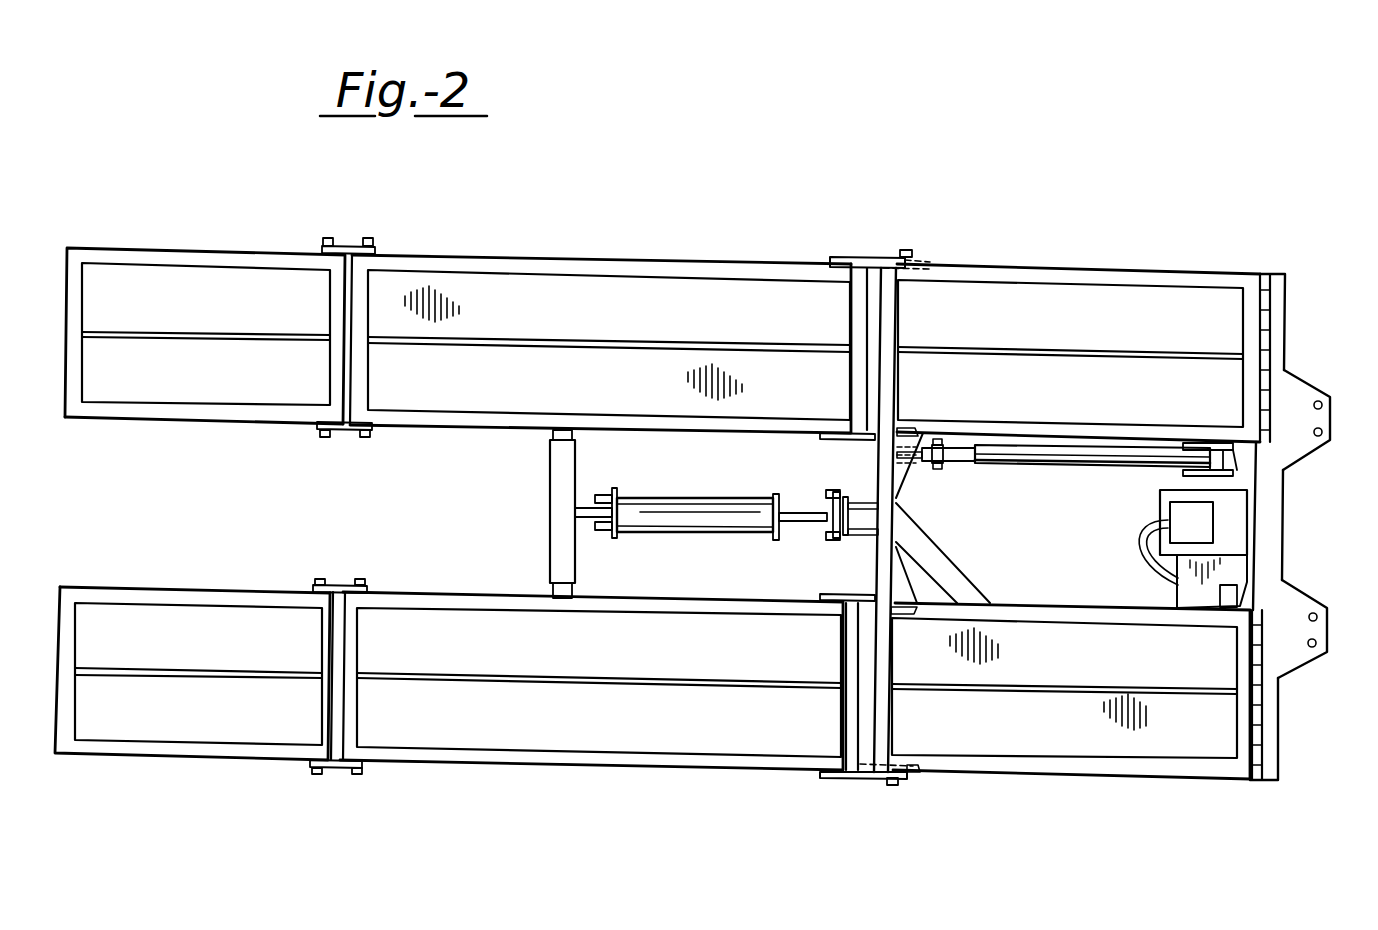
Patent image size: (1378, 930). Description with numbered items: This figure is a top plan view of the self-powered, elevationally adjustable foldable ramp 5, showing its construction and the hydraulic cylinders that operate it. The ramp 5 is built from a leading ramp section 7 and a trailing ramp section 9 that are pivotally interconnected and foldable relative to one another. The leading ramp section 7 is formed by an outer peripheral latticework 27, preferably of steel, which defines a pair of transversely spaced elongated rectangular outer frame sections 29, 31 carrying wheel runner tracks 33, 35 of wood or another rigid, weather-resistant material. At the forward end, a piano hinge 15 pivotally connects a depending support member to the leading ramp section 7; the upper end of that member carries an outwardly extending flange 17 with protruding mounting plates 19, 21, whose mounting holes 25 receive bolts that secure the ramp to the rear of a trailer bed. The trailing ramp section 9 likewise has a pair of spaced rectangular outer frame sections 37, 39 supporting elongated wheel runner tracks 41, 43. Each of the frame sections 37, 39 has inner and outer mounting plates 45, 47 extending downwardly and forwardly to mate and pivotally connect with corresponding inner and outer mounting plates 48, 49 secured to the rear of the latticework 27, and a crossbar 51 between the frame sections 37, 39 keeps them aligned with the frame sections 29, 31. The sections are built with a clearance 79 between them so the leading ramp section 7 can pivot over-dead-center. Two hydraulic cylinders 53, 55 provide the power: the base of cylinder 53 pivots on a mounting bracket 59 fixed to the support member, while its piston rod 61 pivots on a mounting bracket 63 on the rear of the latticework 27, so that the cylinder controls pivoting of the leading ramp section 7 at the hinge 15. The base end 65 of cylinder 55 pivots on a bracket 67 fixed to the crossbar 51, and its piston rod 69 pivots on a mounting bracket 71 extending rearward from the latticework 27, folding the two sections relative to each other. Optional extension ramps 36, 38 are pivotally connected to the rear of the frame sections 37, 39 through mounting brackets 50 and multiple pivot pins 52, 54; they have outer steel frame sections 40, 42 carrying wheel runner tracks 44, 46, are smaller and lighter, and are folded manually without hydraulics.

The ramp 5 is at (902, 194).
The leading ramp section 7 is at (1105, 258).
The trailing ramp section 9 is at (665, 246).
The piano hinge 15 is at (1262, 745).
The flange 17 is at (1290, 300).
The mounting plate 19 is at (1300, 375).
The mounting plate 21 is at (1283, 595).
The mounting holes 25 is at (1322, 402).
The outer peripheral latticework 27 is at (1160, 266).
The outer frame section 29 is at (1195, 274).
The outer frame section 31 is at (1130, 770).
The wheel runner track 33 is at (1061, 327).
The wheel runner track 35 is at (1026, 743).
The extension ramp 36 is at (218, 240).
The outer frame section 37 is at (535, 256).
The extension ramp 38 is at (152, 768).
The outer frame section 39 is at (620, 770).
The outer steel frame section 40 is at (125, 420).
The wheel runner track 41 is at (619, 317).
The outer steel frame section 42 is at (148, 585).
The wheel runner track 43 is at (608, 737).
The wheel runner track 44 is at (204, 311).
The inner mounting plate 45 is at (845, 440).
The wheel runner track 46 is at (171, 733).
The outer mounting plate 47 is at (865, 258).
The inner mounting plate 48 is at (908, 428).
The outer mounting plate 49 is at (935, 268).
The mounting bracket 50 is at (348, 245).
The crossbar 51 is at (548, 512).
The pivot pin 52 is at (370, 238).
The hydraulic cylinder 53 is at (1083, 470).
The pivot pin 54 is at (330, 238).
The hydraulic cylinder 55 is at (758, 498).
The mounting bracket 59 is at (1163, 490).
The piston rod 61 is at (973, 464).
The mounting bracket 63 is at (945, 469).
The base end 65 is at (606, 532).
The bracket 67 is at (606, 498).
The piston rod 69 is at (812, 510).
The mounting bracket 71 is at (830, 540).
The clearance 79 is at (876, 257).